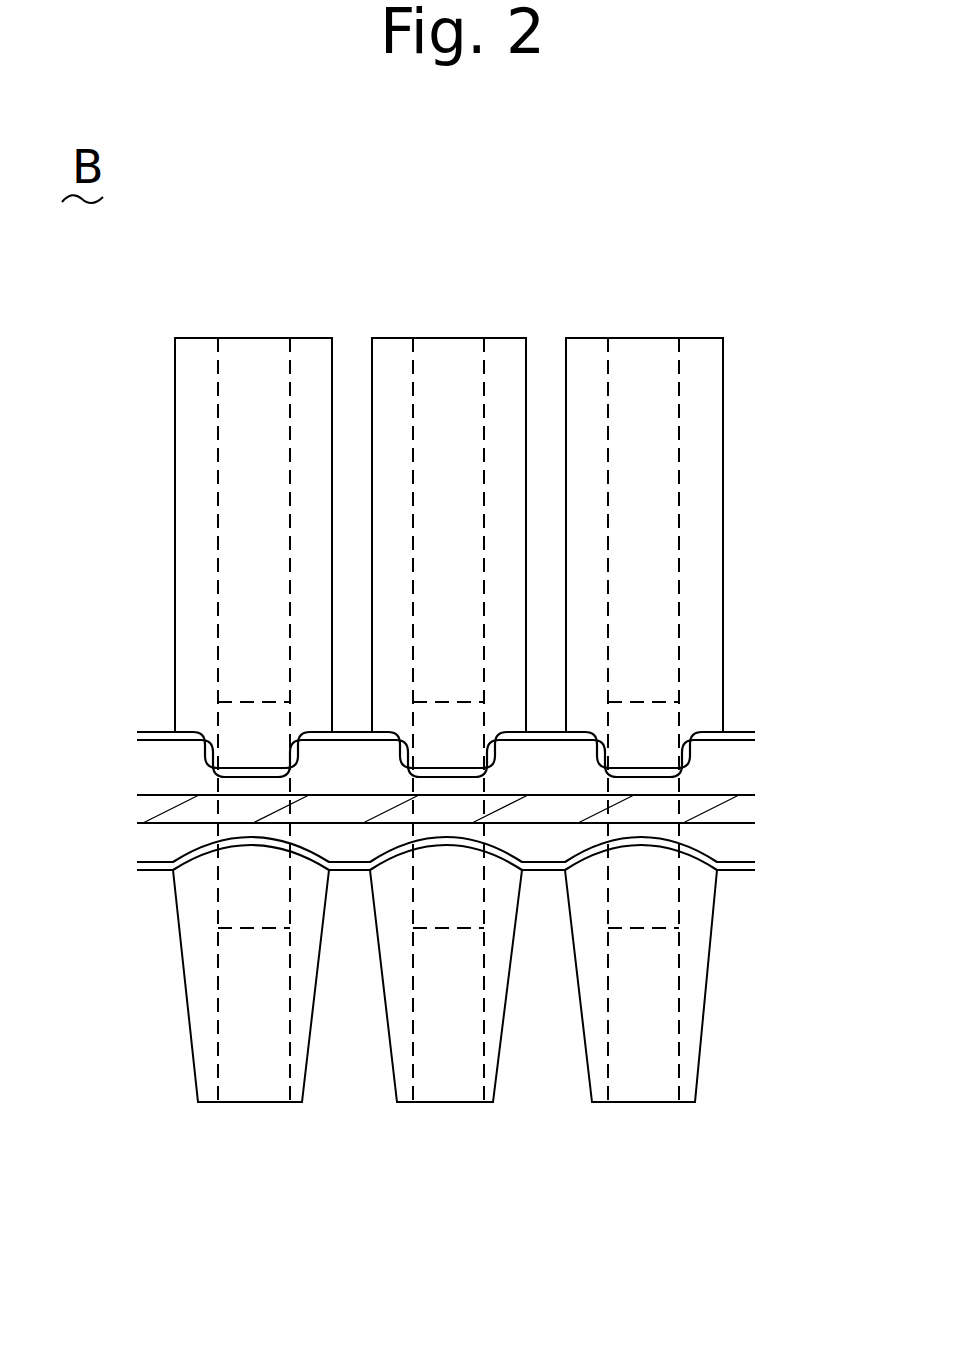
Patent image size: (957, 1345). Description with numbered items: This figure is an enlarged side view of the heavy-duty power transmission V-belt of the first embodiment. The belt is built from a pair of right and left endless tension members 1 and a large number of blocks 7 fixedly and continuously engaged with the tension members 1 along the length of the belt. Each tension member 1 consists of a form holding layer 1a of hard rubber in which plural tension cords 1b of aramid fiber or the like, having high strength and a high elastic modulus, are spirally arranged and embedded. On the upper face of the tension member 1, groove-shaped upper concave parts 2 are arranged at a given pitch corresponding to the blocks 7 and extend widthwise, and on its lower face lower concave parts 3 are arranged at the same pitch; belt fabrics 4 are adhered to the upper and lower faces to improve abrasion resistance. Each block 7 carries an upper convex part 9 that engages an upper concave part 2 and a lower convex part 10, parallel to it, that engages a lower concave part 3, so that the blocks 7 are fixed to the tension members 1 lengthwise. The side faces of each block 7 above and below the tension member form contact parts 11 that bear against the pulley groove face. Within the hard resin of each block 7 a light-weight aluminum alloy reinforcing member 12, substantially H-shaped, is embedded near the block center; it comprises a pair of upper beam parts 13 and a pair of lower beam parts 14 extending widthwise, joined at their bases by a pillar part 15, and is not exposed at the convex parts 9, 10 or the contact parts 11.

The tension member 1 is at (495, 774).
The form holding layer 1a is at (735, 765).
The tension cords 1b is at (735, 828).
The upper concave part 2 is at (247, 768).
The lower concave part 3 is at (443, 848).
The belt fabric 4 is at (140, 735).
The block 7 is at (271, 326).
The upper convex part 9 is at (455, 757).
The lower convex part 10 is at (250, 857).
The contact part 11 is at (247, 498).
The reinforcing member 12 is at (697, 411).
The upper beam part 13 is at (218, 405).
The lower beam part 14 is at (198, 1105).
The pillar part 15 is at (478, 722).